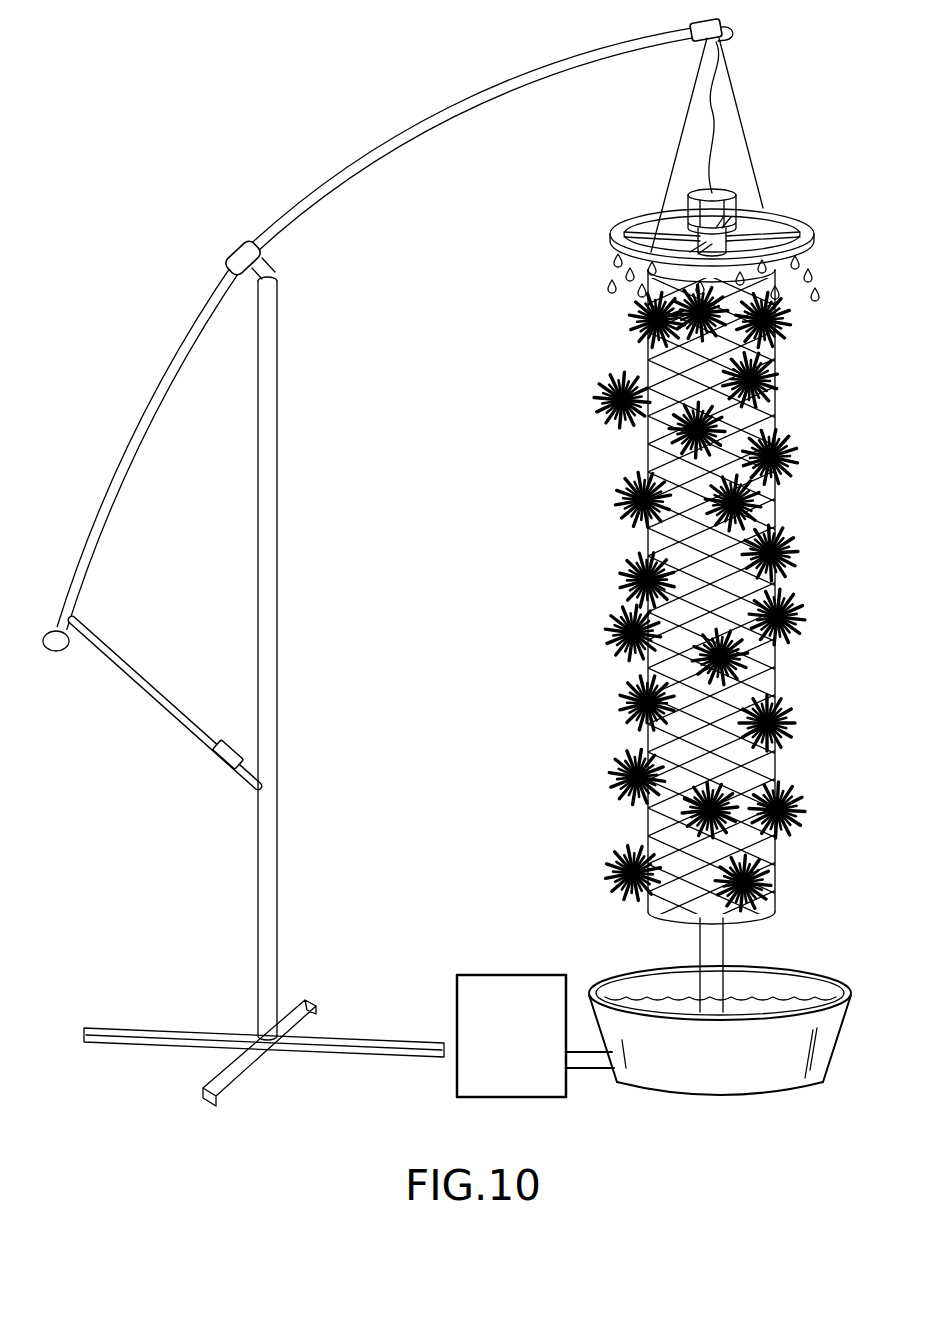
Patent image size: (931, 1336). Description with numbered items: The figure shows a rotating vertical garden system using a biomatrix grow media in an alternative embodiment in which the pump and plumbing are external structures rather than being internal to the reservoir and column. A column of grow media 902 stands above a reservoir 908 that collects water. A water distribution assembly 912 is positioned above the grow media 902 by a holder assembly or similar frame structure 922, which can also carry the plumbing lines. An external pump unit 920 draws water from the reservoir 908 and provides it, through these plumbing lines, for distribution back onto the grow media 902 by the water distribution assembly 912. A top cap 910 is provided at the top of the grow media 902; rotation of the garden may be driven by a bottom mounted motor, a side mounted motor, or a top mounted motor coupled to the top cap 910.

The grow media 902 is at (648, 452).
The reservoir 908 is at (735, 1100).
The top cap 910 is at (698, 192).
The water distribution assembly 912 is at (621, 221).
The pump unit 920 is at (514, 975).
The frame structure 922 is at (278, 668).